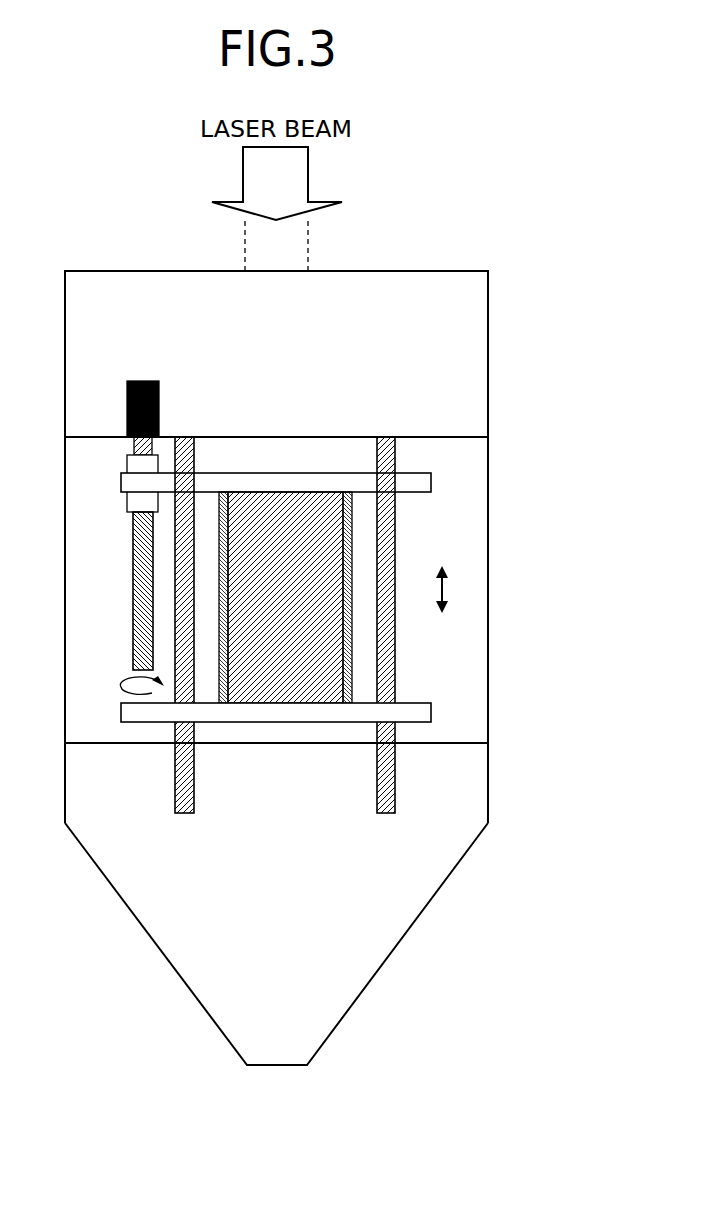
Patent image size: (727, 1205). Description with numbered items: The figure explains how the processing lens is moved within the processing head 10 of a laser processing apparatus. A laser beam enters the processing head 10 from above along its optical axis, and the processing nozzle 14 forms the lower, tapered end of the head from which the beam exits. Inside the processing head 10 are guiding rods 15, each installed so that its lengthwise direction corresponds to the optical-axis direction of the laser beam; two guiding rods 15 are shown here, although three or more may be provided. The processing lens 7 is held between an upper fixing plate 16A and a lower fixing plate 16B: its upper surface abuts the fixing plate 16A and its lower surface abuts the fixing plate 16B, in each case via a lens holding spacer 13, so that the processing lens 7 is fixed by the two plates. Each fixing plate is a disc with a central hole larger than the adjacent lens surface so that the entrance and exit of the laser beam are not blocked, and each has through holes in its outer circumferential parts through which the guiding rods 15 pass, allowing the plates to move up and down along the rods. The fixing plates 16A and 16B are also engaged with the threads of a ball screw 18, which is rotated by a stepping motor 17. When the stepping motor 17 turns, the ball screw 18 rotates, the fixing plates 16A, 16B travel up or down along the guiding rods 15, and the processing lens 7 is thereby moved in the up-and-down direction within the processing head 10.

The processing head 10 is at (489, 320).
The processing nozzle 14 is at (489, 805).
The stepping motor 17 is at (147, 380).
The ball screw 18 is at (133, 578).
The fixing plate 16A is at (424, 494).
The fixing plate 16B is at (424, 702).
The guiding rod 15 is at (175, 771).
The lens holding spacer 13 is at (228, 703).
The processing lens 7 is at (287, 690).